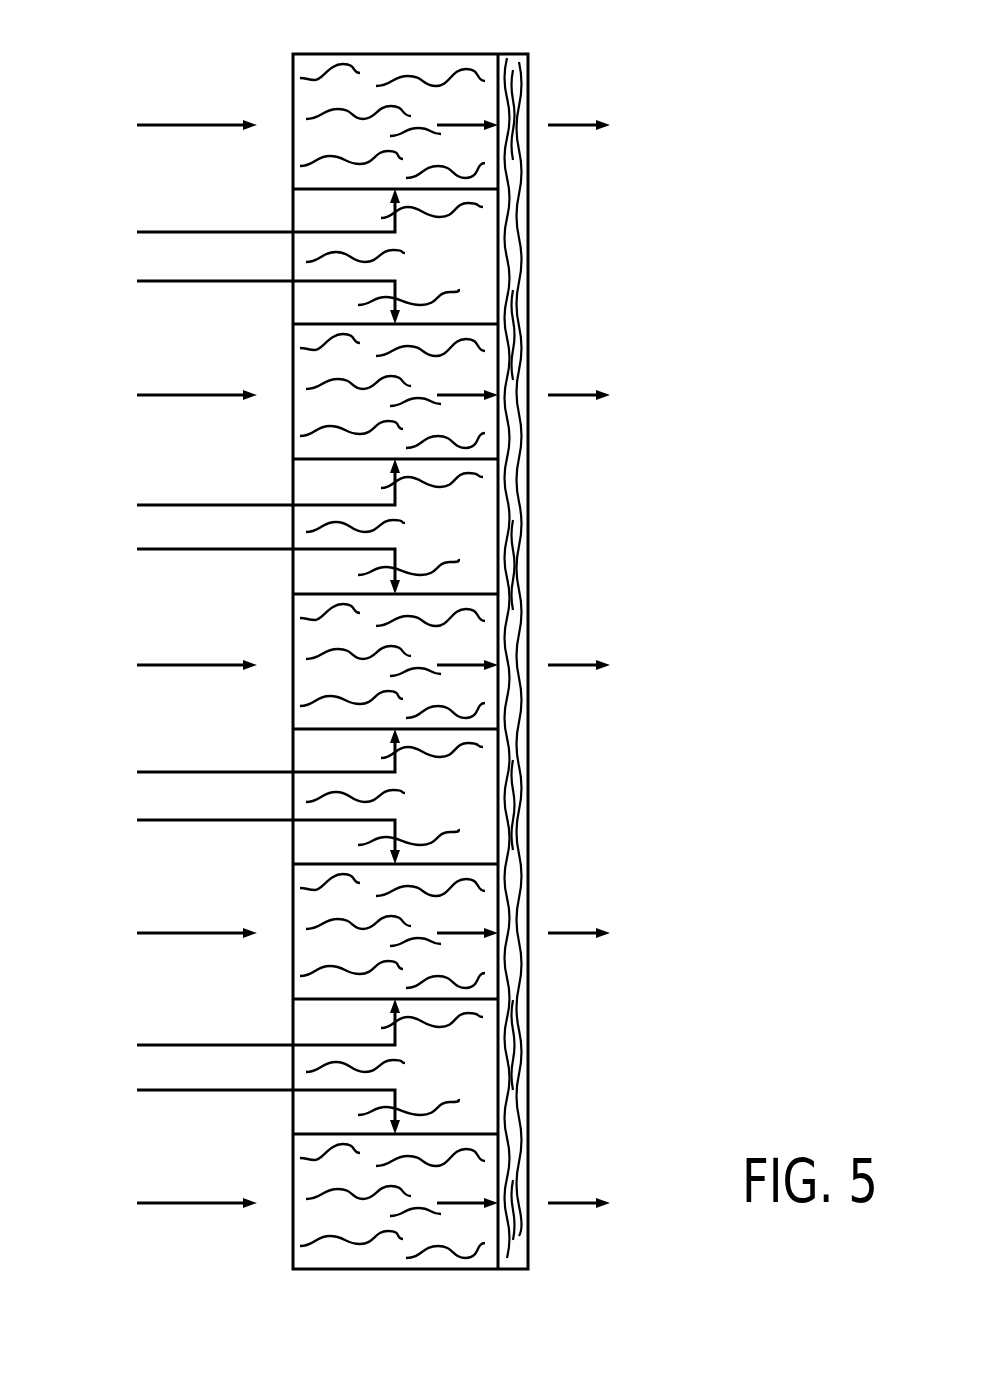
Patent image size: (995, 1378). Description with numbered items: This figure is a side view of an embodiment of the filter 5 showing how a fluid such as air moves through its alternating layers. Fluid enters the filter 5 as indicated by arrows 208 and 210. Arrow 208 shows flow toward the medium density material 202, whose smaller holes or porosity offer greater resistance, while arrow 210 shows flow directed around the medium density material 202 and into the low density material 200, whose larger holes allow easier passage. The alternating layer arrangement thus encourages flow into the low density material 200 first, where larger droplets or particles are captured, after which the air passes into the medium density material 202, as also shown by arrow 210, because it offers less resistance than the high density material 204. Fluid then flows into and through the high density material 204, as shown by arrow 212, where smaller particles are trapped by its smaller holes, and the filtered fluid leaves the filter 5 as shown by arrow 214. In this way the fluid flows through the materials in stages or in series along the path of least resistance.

The filter 5 is at (413, 1297).
The low density material 200 is at (303, 298).
The medium density material 202 is at (303, 143).
The high density material 204 is at (513, 62).
The arrow showing fluid flow toward medium density material 208 is at (150, 124).
The arrow showing fluid flow into low density material 210 is at (150, 231).
The arrow showing fluid flow through high density material 212 is at (458, 127).
The arrow showing filtered fluid 214 is at (575, 124).